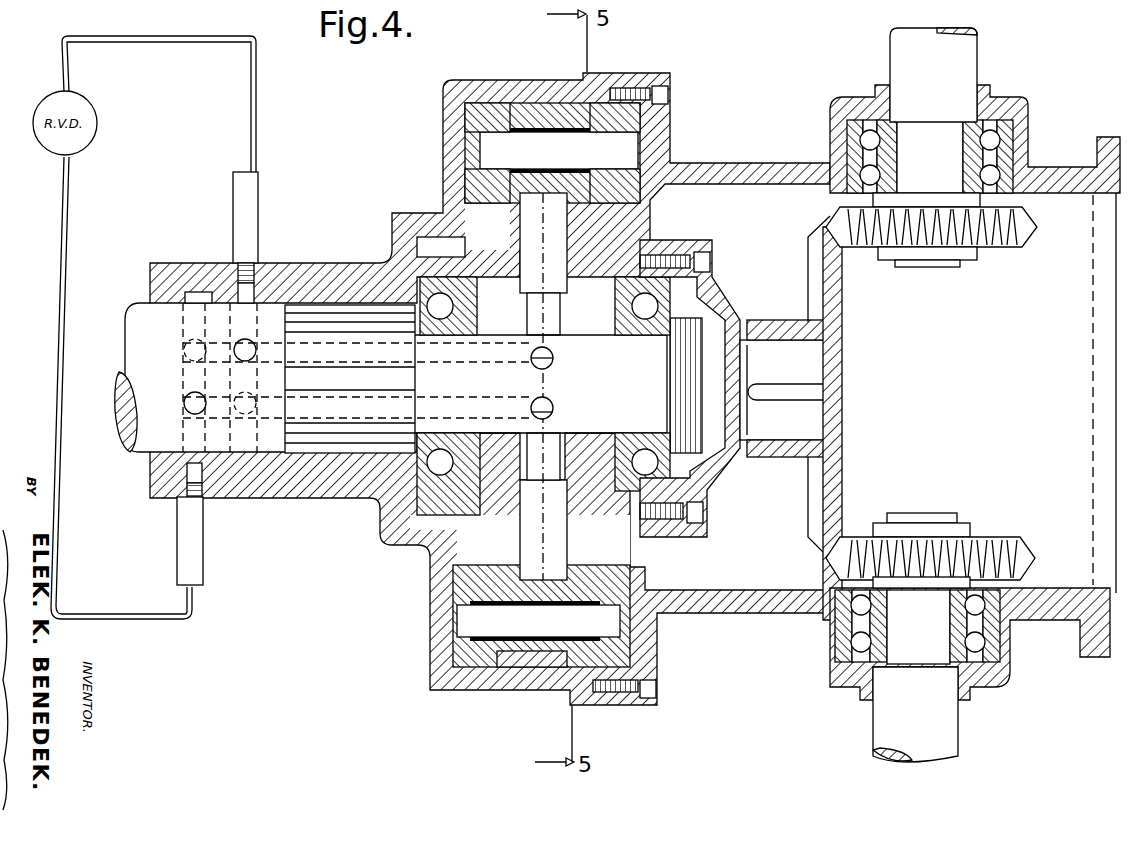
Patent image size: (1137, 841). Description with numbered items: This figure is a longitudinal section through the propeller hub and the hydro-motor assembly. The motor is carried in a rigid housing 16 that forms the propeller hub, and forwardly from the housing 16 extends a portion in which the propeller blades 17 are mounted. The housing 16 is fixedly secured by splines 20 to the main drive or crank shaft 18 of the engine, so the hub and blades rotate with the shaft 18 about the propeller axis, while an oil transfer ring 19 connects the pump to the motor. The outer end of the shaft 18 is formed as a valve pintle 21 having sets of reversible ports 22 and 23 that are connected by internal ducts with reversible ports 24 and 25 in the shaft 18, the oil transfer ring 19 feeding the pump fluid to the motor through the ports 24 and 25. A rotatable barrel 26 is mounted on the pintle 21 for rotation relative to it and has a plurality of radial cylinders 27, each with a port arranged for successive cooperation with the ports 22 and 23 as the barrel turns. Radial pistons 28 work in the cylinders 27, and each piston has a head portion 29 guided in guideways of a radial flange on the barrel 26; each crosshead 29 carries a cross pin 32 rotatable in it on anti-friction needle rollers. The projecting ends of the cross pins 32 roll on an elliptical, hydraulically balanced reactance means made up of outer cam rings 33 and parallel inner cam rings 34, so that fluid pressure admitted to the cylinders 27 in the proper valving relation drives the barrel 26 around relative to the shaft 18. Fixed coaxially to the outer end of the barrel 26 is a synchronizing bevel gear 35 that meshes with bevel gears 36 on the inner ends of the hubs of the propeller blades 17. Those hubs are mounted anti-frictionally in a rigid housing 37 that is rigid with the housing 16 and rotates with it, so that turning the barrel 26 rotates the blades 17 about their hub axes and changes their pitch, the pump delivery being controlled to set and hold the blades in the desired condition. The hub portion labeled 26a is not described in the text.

The housing 16 is at (493, 80).
The propeller blades 17 is at (977, 46).
The main drive or crank shaft 18 is at (128, 320).
The oil transfer ring 19 is at (228, 262).
The splines 20 is at (360, 440).
The valve pintle 21 is at (558, 386).
The reversible ports 22 is at (553, 358).
The reversible ports 23 is at (553, 408).
The reversible ports 24 is at (252, 346).
The reversible ports 25 is at (184, 350).
The rotatable barrel 26 is at (628, 268).
The hub 26a is at (840, 371).
The radial cylinders 27 is at (543, 386).
The radial pistons 28 is at (543, 386).
The head portion 29 is at (523, 660).
The cross pin 32 is at (546, 385).
The outer cam rings 33 is at (470, 117).
The inner cam rings 34 is at (460, 178).
The synchronizing bevel gear 35 is at (843, 297).
The bevel gears 36 is at (1030, 245).
The rigid housing 37 is at (1028, 118).